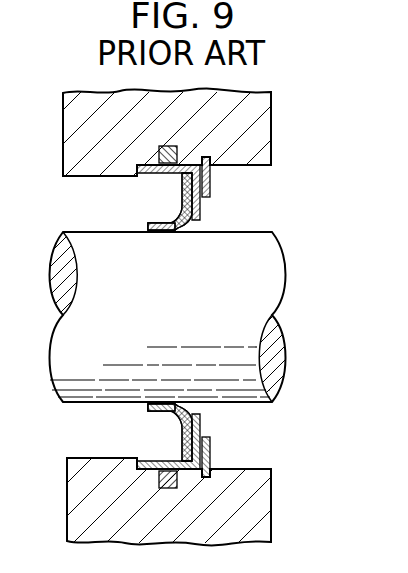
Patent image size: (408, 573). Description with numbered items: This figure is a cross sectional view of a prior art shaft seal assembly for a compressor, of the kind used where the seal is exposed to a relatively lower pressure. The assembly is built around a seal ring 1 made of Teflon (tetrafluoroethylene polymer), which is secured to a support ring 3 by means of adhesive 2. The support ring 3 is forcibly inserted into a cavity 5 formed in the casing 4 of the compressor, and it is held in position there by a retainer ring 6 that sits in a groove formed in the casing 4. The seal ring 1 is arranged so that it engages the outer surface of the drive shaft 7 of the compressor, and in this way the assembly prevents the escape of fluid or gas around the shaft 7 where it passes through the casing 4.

The seal ring 1 is at (160, 222).
The adhesive 2 is at (188, 228).
The support ring 3 is at (202, 210).
The casing 4 is at (265, 138).
The cavity 5 is at (103, 177).
The retainer ring 6 is at (210, 180).
The drive shaft 7 is at (274, 281).